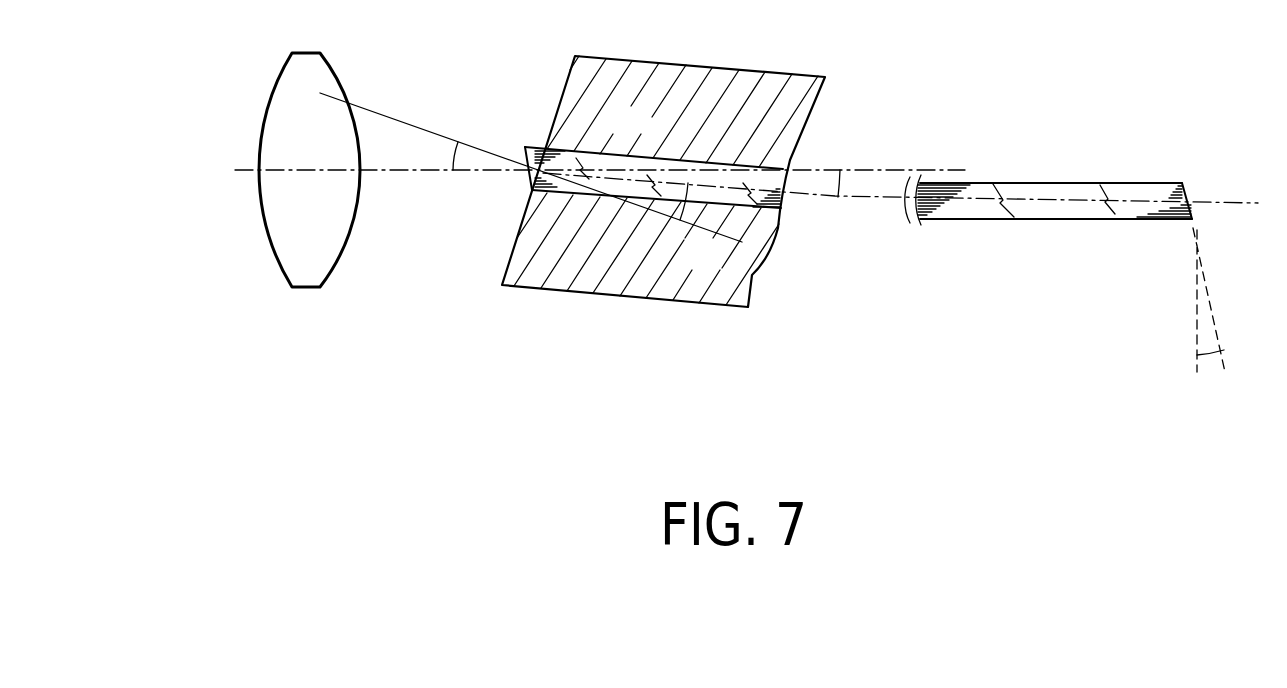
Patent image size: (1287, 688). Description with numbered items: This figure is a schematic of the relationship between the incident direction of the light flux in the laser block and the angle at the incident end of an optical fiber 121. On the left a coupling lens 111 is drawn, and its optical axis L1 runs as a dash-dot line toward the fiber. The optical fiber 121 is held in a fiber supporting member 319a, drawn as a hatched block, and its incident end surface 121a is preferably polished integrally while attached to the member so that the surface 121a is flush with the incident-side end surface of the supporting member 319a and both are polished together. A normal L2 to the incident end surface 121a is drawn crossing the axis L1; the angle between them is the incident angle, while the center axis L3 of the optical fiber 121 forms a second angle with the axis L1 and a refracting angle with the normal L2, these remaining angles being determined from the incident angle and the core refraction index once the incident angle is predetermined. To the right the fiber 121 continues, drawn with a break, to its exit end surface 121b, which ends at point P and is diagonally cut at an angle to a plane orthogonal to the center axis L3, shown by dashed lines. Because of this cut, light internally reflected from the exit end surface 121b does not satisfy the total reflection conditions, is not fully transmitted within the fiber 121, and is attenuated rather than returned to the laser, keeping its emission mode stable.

The coupling lens 111 is at (279, 229).
The optical fiber 121 is at (606, 157).
The incident end surface 121a is at (528, 176).
The exit end surface 121b is at (1183, 184).
The fiber supporting member 319a is at (753, 78).
The optical axis L1 is at (399, 175).
The normal L2 is at (373, 110).
The center axis L3 is at (880, 201).
The exit point P is at (1209, 285).